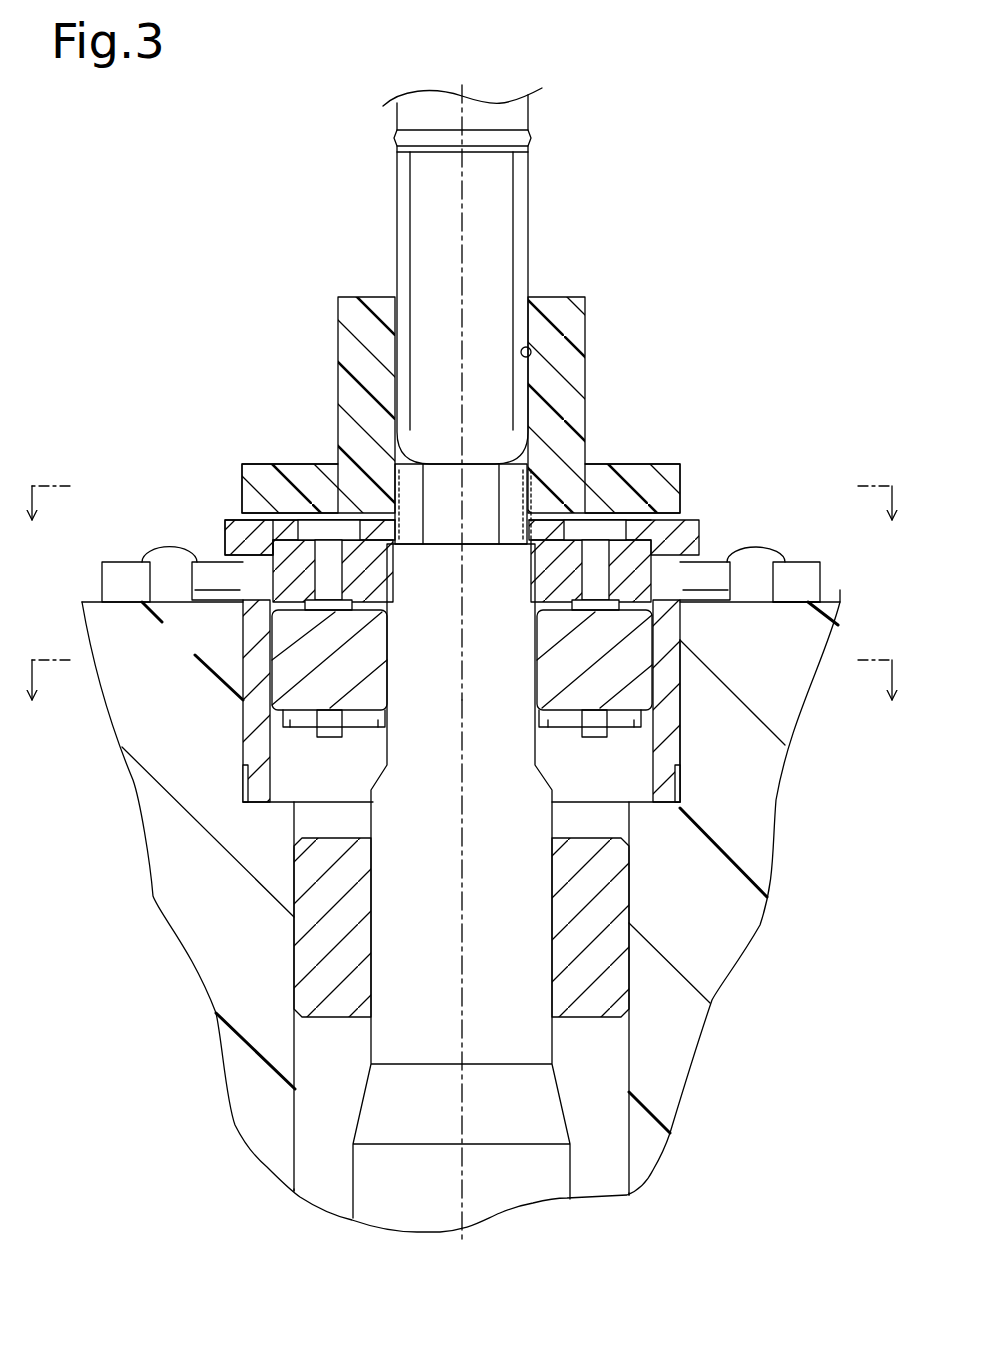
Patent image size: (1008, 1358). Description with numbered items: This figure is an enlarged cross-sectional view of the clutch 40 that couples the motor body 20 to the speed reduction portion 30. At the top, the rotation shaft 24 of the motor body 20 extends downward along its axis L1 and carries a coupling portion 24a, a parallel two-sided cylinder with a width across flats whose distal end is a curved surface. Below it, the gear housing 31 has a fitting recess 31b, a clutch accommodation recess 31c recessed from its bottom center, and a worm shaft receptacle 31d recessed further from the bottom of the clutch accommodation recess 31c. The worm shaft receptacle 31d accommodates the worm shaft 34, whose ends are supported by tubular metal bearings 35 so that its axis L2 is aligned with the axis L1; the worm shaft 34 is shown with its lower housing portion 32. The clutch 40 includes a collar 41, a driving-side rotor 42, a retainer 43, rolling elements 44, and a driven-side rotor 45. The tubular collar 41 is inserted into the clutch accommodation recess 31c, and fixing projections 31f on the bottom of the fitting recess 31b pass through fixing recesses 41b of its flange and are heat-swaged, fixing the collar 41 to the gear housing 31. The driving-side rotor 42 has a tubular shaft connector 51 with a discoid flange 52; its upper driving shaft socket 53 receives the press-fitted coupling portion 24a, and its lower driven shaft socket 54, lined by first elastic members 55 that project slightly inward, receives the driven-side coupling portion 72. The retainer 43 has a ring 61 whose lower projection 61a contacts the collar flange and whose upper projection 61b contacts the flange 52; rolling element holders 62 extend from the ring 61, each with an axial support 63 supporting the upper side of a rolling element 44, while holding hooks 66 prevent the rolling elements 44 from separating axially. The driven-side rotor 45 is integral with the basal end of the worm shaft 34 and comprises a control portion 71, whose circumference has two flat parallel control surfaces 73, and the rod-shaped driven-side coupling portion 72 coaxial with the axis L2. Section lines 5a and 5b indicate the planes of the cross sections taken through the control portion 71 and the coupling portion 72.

The motor body 20 is at (466, 276).
The rotation shaft 24 is at (528, 106).
The coupling portion 24a is at (522, 200).
The speed reduction portion 30 is at (449, 894).
The gear housing 31 is at (668, 1063).
The fitting recess 31b is at (791, 608).
The clutch accommodation recess 31c is at (677, 743).
The worm shaft receptacle 31d is at (293, 1168).
The fixing projections 31f is at (172, 560).
The bottom wall 32 is at (461, 1241).
The worm shaft 34 is at (390, 1210).
The bearings 35 is at (612, 881).
The clutch 40 is at (495, 418).
The collar 41 is at (246, 716).
The fixing recesses 41b is at (192, 600).
The driving-side rotor 42 is at (585, 325).
The retainer 43 is at (680, 520).
The rolling elements 44 is at (305, 722).
The driven-side rotor 45 is at (366, 720).
The shaft connector 51 is at (345, 346).
The flange 52 is at (268, 478).
The driving shaft socket 53 is at (531, 353).
The driven shaft socket 54 is at (538, 500).
The first elastic members 55 is at (401, 505).
The ring 61 is at (250, 531).
The lower projection 61a is at (229, 572).
The upper projection 61b is at (265, 506).
The rolling element holders 62 is at (263, 608).
The axial support 63 is at (375, 596).
The holding hook 66 is at (326, 738).
The control portion 71 is at (508, 740).
The driven-side coupling portion 72 is at (440, 478).
The control surfaces 73 is at (385, 660).
The axis of the rotation shaft L1 is at (462, 242).
The axis of the worm shaft L2 is at (465, 890).
The section line 5a is at (463, 697).
The section line 5b is at (464, 522).